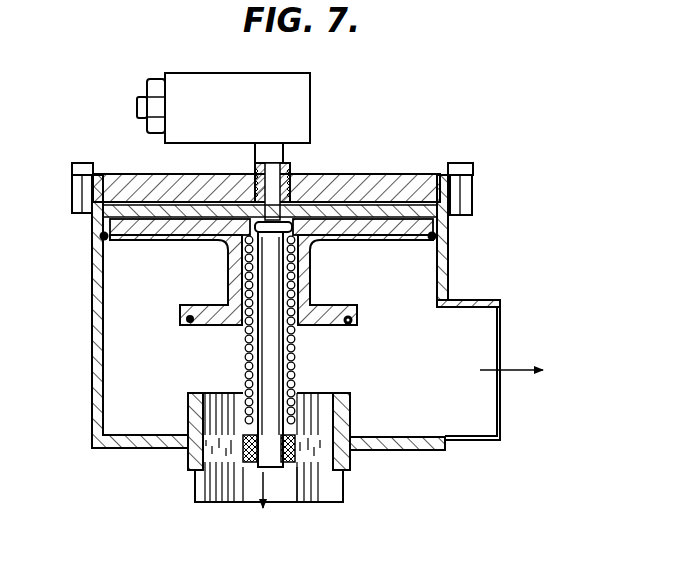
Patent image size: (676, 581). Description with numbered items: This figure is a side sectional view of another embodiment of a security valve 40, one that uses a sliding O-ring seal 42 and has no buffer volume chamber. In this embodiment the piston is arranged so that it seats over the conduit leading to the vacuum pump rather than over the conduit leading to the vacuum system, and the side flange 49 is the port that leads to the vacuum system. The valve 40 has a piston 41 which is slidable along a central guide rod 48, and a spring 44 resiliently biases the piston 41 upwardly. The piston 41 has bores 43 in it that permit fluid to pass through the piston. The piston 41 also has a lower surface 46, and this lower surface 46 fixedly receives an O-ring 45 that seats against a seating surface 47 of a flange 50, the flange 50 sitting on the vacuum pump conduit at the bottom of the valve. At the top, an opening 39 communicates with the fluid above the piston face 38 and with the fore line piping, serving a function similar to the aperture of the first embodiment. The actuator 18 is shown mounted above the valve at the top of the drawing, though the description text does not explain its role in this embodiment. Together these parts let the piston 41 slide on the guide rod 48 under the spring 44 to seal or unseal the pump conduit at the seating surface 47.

The actuator 18 is at (313, 102).
The piston face 38 is at (381, 194).
The opening 39 is at (279, 207).
The valve 40 is at (73, 279).
The piston 41 is at (192, 238).
The sliding O-ring seal 42 is at (99, 238).
The bores 43 is at (160, 236).
The spring 44 is at (245, 363).
The O-ring 45 is at (351, 327).
The lower surface 46 is at (315, 329).
The seating surface 47 is at (347, 391).
The guide rod 48 is at (246, 347).
The side flange 49 is at (488, 297).
The flange 50 is at (193, 493).